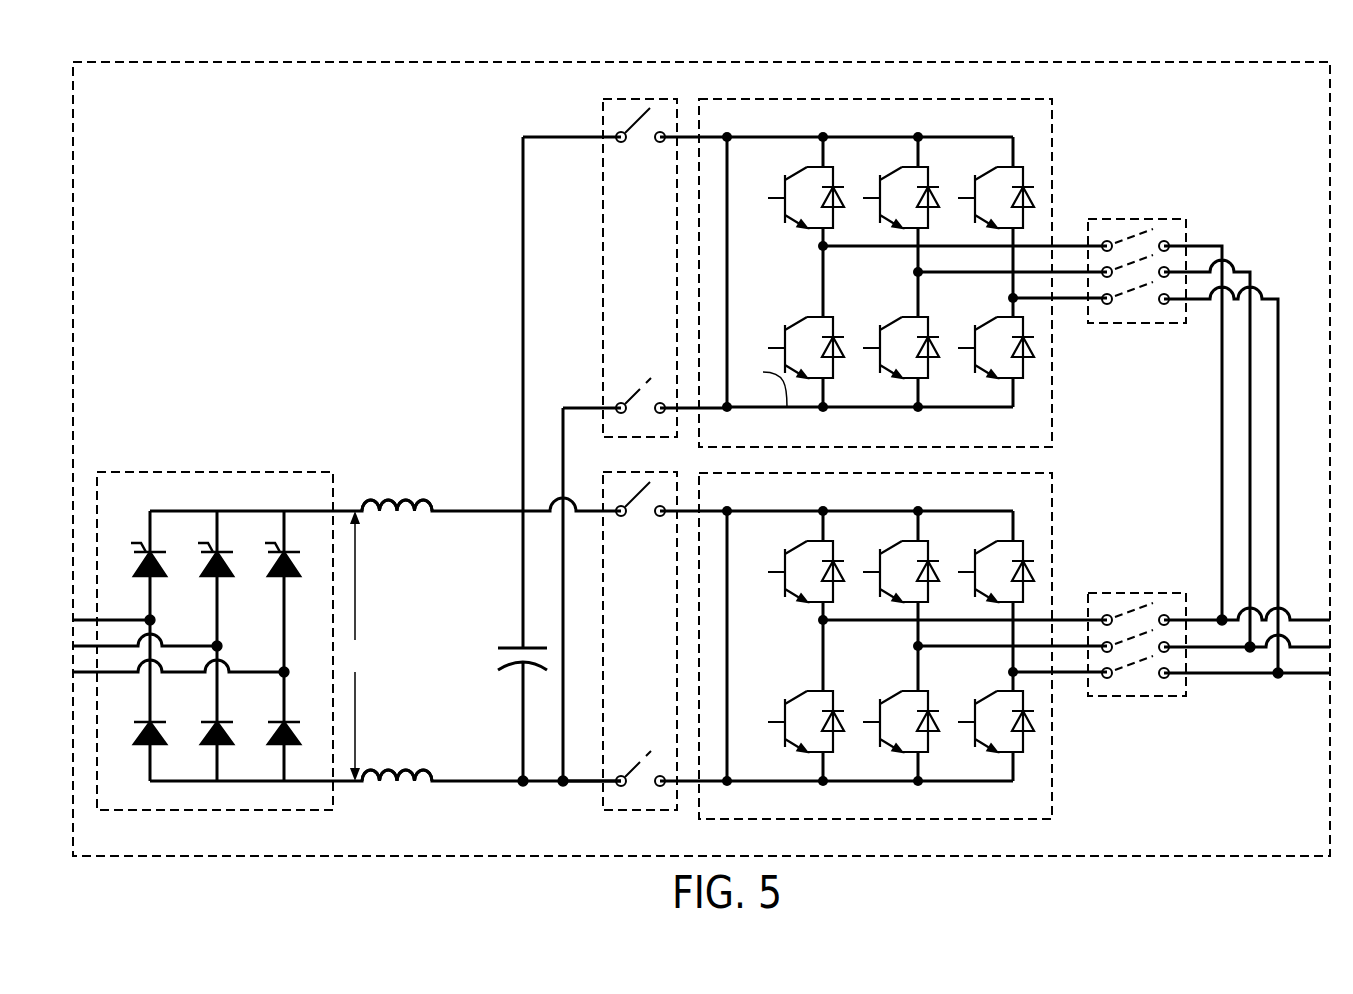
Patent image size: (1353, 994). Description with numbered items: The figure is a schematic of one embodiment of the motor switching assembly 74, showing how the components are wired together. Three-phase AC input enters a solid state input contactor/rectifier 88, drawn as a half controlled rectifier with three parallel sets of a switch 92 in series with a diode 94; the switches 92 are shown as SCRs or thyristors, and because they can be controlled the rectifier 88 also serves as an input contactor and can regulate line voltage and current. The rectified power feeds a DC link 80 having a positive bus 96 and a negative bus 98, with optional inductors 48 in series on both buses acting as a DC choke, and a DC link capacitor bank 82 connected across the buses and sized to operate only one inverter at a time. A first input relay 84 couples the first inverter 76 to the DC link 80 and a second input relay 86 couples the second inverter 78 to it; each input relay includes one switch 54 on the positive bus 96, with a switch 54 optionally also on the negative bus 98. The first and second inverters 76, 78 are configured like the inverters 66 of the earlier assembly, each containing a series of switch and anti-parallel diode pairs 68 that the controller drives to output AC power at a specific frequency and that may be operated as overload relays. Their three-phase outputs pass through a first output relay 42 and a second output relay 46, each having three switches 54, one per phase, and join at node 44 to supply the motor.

The motor switching assembly 74 is at (363, 62).
The solid state input contactor/rectifier 88 is at (148, 472).
The switch 92 is at (283, 560).
The diode 94 is at (295, 733).
The DC link 80 is at (355, 646).
The positive bus 96 is at (345, 509).
The negative bus 98 is at (343, 785).
The inductors 48 is at (407, 513).
The DC link capacitor bank 82 is at (502, 667).
The second input relay 86 is at (640, 99).
The first input relay 84 is at (641, 810).
The switch 54 is at (642, 142).
The second inverter 78 is at (876, 99).
The first inverter 76 is at (1052, 752).
The inverter 66 is at (962, 124).
The switch and anti-parallel diode pairs 68 is at (799, 234).
The second output relay 46 is at (1138, 219).
The first output relay 42 is at (1138, 593).
The node 44 is at (1278, 683).